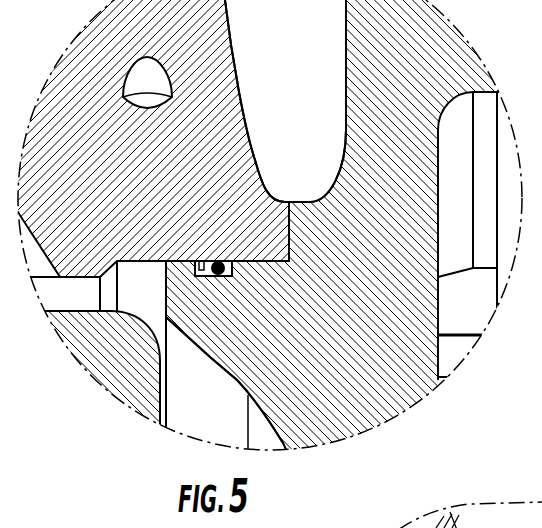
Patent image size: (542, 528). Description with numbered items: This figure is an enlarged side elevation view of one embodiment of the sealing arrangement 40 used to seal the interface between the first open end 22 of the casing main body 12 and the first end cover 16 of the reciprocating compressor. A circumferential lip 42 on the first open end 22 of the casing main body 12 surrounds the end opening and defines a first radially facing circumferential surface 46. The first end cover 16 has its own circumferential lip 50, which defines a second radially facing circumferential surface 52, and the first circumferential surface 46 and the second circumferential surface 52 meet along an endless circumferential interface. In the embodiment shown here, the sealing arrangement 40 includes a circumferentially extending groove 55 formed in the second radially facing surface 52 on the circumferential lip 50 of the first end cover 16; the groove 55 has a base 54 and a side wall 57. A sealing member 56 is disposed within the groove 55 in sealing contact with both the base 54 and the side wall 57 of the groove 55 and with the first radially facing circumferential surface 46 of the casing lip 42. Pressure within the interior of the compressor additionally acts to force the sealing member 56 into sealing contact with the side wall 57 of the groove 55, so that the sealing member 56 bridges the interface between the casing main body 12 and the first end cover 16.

The casing main body 12 is at (240, 88).
The first end cover 16 is at (345, 118).
The first open end 22 is at (150, 261).
The sealing arrangement 40 is at (250, 300).
The circumferential lip 42 is at (243, 175).
The first radially facing circumferential surface 46 is at (245, 266).
The circumferential lip 50 is at (212, 358).
The second radially facing circumferential surface 52 is at (180, 260).
The base 54 is at (205, 277).
The circumferentially extending groove 55 is at (200, 262).
The sealing member 56 is at (218, 262).
The side wall 57 is at (220, 278).